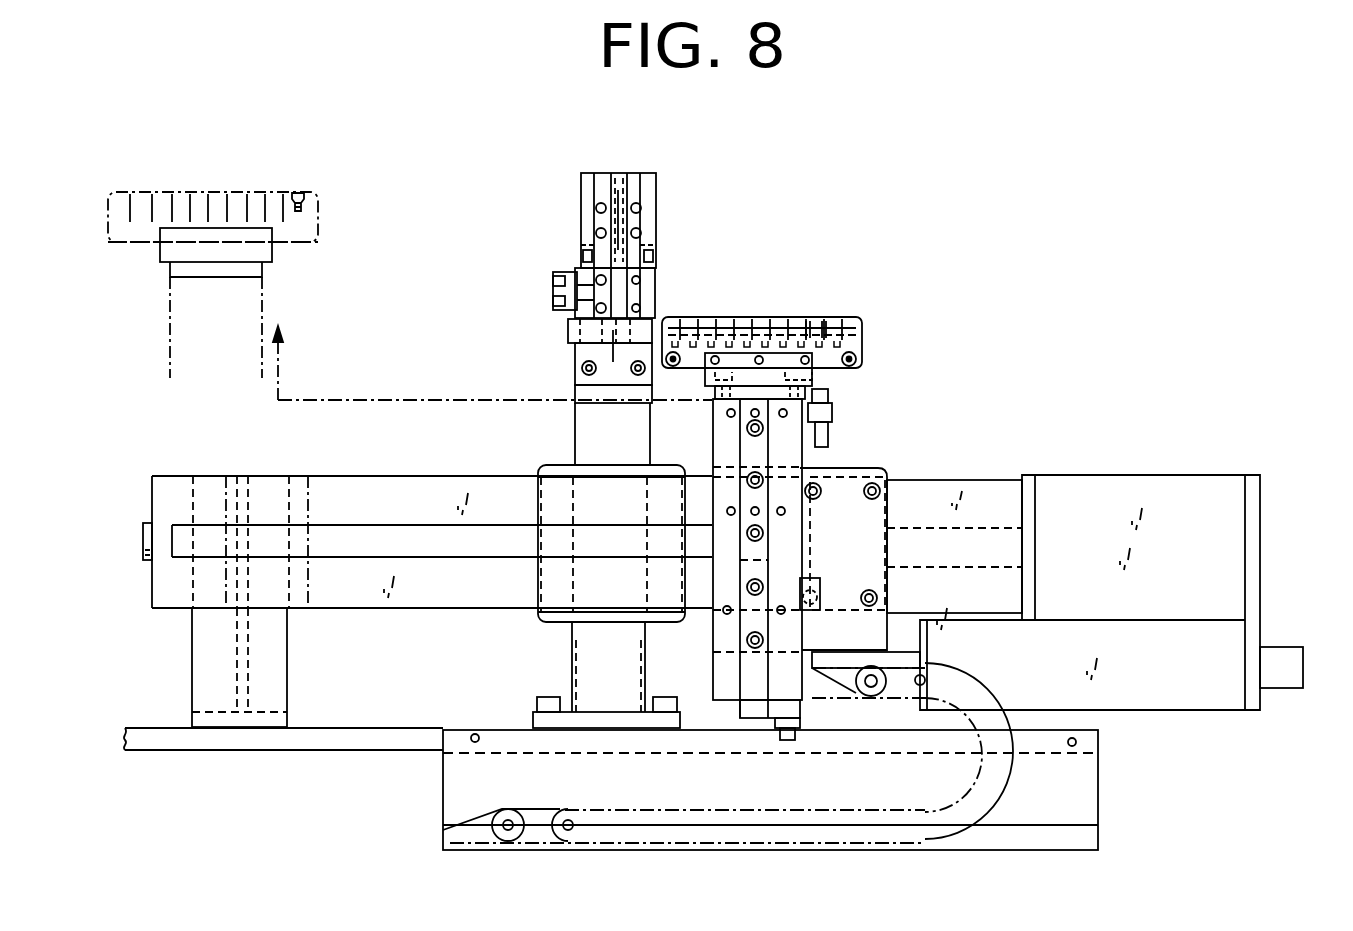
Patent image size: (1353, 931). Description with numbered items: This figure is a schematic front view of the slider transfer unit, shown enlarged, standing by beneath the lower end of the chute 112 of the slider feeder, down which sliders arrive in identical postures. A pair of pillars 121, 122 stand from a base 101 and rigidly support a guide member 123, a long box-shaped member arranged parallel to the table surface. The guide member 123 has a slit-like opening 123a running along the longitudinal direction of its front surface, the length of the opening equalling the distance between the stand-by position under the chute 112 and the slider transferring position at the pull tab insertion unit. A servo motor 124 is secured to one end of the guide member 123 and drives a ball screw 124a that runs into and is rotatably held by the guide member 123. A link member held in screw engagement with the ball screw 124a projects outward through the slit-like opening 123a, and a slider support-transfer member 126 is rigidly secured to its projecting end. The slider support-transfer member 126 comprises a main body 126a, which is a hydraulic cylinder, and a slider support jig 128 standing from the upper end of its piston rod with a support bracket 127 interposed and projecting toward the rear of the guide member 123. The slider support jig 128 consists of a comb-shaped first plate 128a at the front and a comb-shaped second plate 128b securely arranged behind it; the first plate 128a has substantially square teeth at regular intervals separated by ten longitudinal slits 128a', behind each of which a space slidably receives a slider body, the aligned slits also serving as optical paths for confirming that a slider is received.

The base 101 is at (343, 740).
The chute 112 is at (655, 205).
The pillar 121 is at (270, 672).
The pillar 122 is at (580, 652).
The guide member 123 is at (985, 500).
The slit-like opening 123a is at (355, 540).
The servo motor 124 is at (1152, 688).
The ball screw 124a is at (142, 548).
The slider support-transfer member 126 is at (835, 430).
The main body 126a is at (725, 444).
The support bracket 127 is at (813, 377).
The slider support jig 128 is at (750, 313).
The comb-shaped first plate 128a is at (870, 313).
The longitudinal slits 128a' is at (845, 291).
The comb-shaped second plate 128b is at (756, 344).